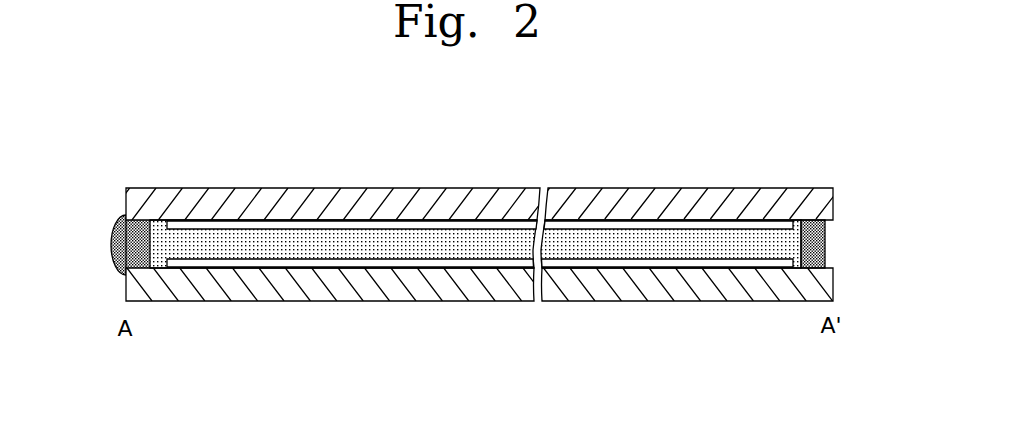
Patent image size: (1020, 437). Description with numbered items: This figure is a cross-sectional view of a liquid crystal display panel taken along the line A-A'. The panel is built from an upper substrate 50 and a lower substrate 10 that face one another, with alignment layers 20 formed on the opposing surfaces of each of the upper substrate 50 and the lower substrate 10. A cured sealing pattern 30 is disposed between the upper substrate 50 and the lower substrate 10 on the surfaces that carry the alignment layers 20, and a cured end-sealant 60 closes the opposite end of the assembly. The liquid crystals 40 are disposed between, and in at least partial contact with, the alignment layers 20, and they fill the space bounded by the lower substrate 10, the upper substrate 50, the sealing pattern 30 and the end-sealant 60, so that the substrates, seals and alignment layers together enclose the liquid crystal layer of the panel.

The lower substrate 10 is at (833, 288).
The alignment layers 20 is at (660, 222).
The sealing pattern 30 is at (825, 245).
The liquid crystals 40 is at (385, 259).
The upper substrate 50 is at (833, 206).
The end-sealant 60 is at (110, 245).